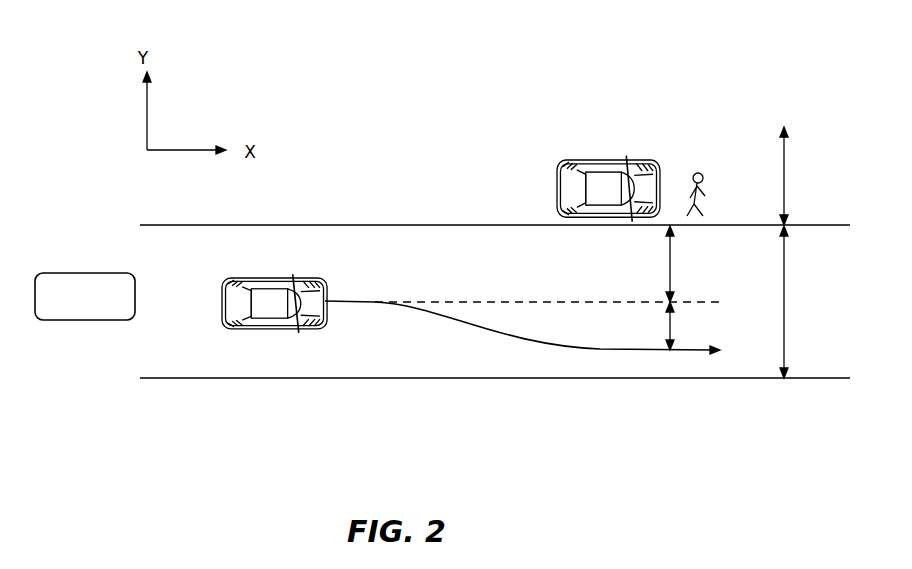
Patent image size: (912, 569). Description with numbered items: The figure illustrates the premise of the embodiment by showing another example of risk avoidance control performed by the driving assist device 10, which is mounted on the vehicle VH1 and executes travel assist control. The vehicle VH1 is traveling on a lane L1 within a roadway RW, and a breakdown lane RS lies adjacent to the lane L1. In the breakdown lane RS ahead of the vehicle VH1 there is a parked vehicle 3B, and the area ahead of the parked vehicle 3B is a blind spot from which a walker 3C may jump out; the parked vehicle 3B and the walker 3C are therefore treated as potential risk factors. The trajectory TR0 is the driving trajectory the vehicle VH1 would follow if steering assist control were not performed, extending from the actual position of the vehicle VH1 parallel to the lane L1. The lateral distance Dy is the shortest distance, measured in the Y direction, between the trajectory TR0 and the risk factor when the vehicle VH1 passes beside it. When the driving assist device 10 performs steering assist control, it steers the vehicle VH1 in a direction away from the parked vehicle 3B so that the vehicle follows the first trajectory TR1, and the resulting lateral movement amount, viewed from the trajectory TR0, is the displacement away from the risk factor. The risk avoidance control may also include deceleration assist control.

The vehicle VH1 is at (262, 278).
The driving assist device 10 is at (308, 318).
The parked vehicle 3B is at (600, 165).
The walker 3C is at (705, 193).
The lane L1 is at (85, 296).
The trajectory TR0 is at (564, 302).
The first trajectory TR1 is at (539, 331).
The lateral distance Dy is at (655, 264).
The breakdown lane RS is at (808, 176).
The roadway RW is at (810, 302).